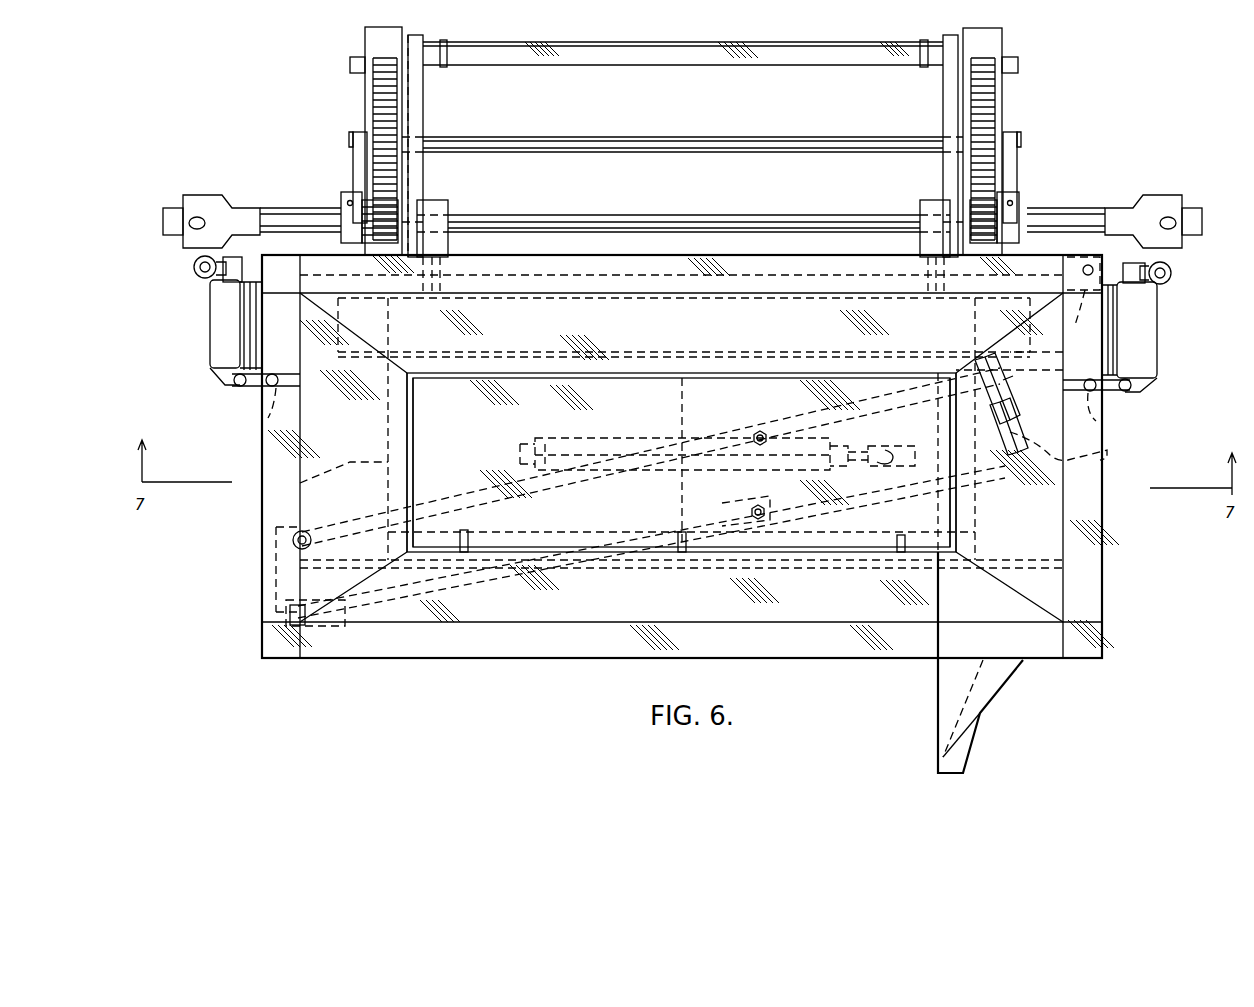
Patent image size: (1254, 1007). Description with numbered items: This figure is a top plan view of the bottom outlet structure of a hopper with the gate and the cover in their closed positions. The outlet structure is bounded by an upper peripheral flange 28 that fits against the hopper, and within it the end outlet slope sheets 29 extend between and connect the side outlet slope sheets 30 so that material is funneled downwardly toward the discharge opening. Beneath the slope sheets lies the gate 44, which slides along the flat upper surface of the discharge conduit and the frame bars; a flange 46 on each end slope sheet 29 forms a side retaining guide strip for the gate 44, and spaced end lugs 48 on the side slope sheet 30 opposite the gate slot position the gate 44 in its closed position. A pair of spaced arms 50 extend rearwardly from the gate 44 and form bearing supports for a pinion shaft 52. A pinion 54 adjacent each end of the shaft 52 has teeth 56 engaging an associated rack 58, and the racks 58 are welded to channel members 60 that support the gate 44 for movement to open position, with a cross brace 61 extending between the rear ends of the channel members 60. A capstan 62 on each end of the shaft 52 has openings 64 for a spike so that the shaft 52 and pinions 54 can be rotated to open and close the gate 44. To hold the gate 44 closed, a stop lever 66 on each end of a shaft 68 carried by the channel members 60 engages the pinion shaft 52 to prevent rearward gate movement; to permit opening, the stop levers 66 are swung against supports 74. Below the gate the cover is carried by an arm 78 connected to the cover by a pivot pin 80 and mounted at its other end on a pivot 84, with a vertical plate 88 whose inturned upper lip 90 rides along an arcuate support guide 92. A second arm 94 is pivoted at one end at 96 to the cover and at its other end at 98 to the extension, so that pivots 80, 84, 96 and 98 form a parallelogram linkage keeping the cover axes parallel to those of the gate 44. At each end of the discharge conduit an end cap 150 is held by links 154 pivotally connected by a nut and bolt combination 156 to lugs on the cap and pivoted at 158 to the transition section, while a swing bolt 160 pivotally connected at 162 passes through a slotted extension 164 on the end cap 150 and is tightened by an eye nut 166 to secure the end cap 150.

The upper peripheral flange 28 is at (690, 456).
The end outlet slope sheets 29 is at (681, 457).
The side outlet slope sheets 30 is at (681, 460).
The gate 44 is at (725, 444).
The flange 46 is at (413, 390).
The end lugs 48 is at (468, 538).
The arms 50 is at (440, 200).
The pinion shaft 52 is at (688, 215).
The pinion 54 is at (350, 196).
The teeth 56 is at (362, 243).
The rack 58 is at (365, 95).
The channel members 60 is at (423, 112).
The cross brace 61 is at (660, 42).
The capstan 62 is at (200, 210).
The openings 64 is at (195, 222).
The stop lever 66 is at (353, 163).
The shaft 68 is at (688, 140).
The supports 74 is at (350, 62).
The arm 78 is at (580, 497).
The pivot pin 80 is at (767, 436).
The pivot 84 is at (311, 538).
The vertical plate 88 is at (1012, 412).
The inturned upper lip 90 is at (1005, 398).
The arcuate support guide 92 is at (1000, 560).
The second arm 94 is at (553, 572).
The pivot 96 is at (766, 512).
The pivot 98 is at (292, 628).
The end cap 150 is at (210, 322).
The links 154 is at (270, 386).
The nut and bolt combination 156 is at (234, 380).
The pivot 158 is at (268, 418).
The swing bolt 160 is at (1105, 250).
The pivotal connection 162 is at (1076, 307).
The slotted extension 164 is at (232, 270).
The eye nut 166 is at (194, 267).